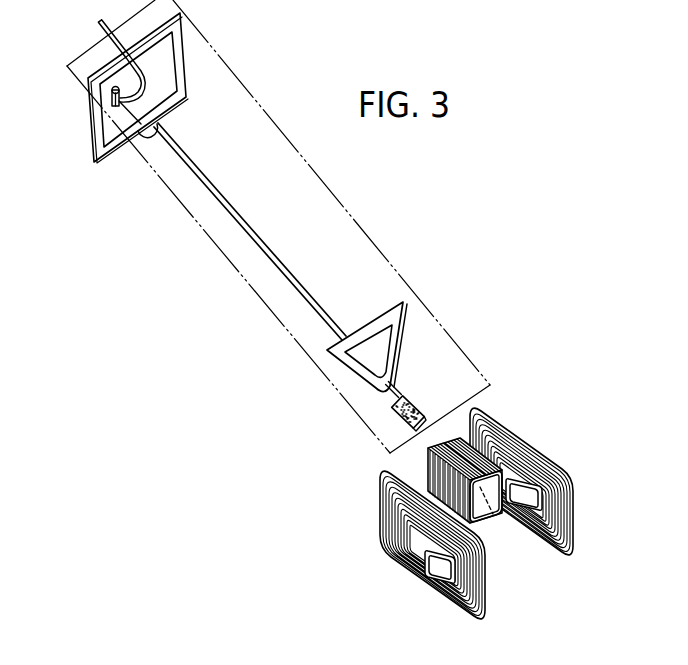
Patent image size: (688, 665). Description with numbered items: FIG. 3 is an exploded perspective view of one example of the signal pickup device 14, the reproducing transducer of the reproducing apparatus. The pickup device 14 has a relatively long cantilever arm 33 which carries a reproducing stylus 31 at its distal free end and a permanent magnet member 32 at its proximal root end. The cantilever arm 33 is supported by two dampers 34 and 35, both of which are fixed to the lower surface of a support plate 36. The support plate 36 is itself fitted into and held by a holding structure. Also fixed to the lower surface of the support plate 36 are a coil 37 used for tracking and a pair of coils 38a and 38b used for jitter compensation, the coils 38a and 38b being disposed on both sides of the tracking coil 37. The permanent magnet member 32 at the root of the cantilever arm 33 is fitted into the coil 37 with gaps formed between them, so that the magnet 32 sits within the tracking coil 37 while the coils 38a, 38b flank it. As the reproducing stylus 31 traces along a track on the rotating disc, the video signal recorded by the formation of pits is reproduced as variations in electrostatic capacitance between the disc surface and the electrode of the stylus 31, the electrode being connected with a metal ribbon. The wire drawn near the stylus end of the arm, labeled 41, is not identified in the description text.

The signal pickup device 14 is at (353, 168).
The reproducing stylus 31 is at (112, 96).
The permanent magnet member 32 is at (393, 428).
The cantilever arm 33 is at (245, 227).
The damper 34 is at (184, 71).
The damper 35 is at (381, 316).
The support plate 36 is at (362, 227).
The coil 37 is at (490, 510).
The coil 38a is at (385, 565).
The coil 38b is at (541, 444).
The wire 41 is at (101, 32).